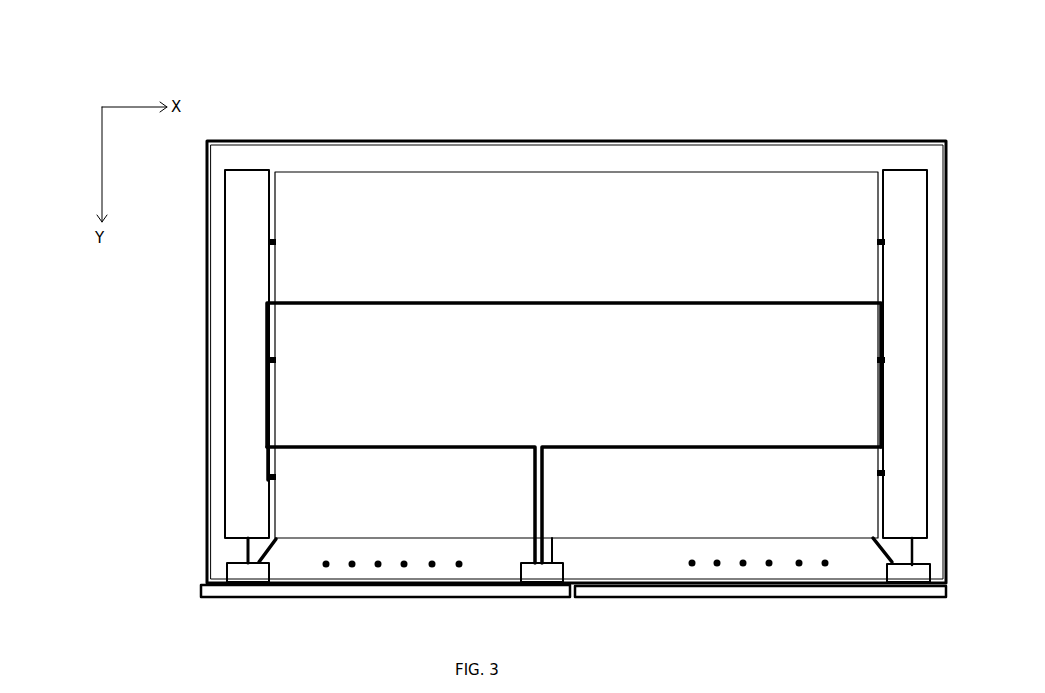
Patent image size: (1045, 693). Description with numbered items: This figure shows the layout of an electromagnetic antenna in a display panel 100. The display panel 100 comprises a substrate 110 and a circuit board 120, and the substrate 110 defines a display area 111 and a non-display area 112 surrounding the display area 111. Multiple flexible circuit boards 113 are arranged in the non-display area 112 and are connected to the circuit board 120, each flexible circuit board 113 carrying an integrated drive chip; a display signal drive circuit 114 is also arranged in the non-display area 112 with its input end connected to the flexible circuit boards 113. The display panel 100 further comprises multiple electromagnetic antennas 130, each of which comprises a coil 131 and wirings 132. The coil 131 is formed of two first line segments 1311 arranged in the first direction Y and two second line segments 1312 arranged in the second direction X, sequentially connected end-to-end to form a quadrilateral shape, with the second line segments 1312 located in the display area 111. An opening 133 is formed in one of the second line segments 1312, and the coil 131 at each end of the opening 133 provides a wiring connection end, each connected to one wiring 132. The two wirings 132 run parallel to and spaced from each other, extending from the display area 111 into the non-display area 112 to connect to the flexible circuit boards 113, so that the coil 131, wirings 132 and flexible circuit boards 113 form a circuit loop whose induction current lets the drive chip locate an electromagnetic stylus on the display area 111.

The display panel 100 is at (243, 95).
The substrate 110 is at (547, 98).
The display area 111 is at (483, 188).
The non-display area 112 is at (400, 158).
The flexible circuit boards 113 is at (238, 567).
The display signal drive circuit 114 is at (237, 279).
The circuit board 120 is at (197, 590).
The electromagnetic antennas 130 is at (88, 517).
The coil 131 is at (133, 407).
The first line segments 1311 is at (265, 398).
The second line segments 1312 is at (268, 452).
The wirings 132 is at (311, 505).
The opening 133 is at (537, 445).